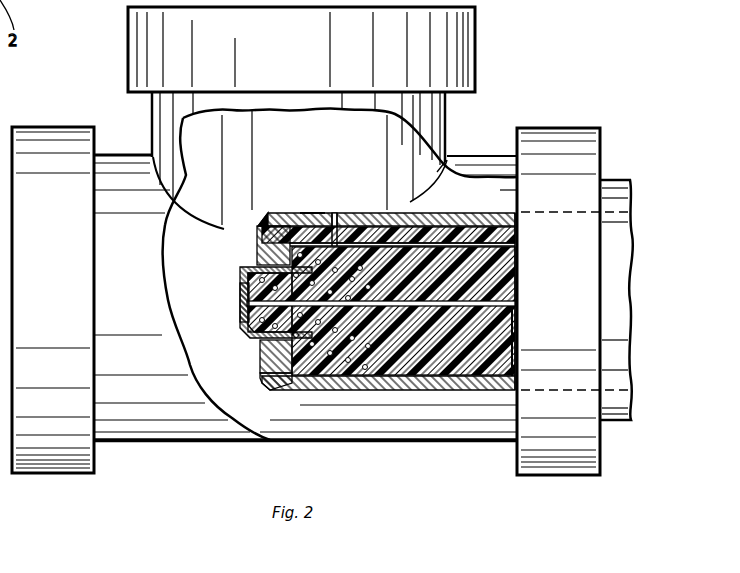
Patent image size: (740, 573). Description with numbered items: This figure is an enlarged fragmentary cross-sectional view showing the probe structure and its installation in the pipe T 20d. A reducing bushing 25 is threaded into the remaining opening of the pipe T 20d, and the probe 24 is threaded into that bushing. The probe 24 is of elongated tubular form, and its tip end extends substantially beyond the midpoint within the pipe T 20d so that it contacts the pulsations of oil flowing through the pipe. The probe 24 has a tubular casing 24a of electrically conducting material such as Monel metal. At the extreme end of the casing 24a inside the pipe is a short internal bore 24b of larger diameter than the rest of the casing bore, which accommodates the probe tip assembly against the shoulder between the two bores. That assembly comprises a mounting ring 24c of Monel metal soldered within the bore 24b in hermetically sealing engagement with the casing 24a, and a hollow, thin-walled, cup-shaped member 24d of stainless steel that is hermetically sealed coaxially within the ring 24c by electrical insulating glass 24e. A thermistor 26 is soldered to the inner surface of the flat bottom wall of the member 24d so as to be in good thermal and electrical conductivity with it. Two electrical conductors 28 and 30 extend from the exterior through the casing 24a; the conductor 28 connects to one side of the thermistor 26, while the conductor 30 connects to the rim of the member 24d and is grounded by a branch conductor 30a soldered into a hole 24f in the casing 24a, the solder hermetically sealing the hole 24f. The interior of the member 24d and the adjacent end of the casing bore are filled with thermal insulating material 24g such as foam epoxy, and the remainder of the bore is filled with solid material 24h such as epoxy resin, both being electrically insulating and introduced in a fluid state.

The pipe T 20d is at (186, 442).
The probe 24 is at (378, 211).
The tubular casing 24a is at (318, 215).
The internal bore 24b is at (262, 378).
The mounting ring 24c is at (266, 229).
The cup-shaped member 24d is at (260, 352).
The glass 24e is at (270, 252).
The hole 24f is at (335, 214).
The thermal insulating material 24g is at (243, 320).
The solid material 24h is at (518, 340).
The reducing bushing 25 is at (612, 186).
The thermistor 26 is at (243, 301).
The electrical conductor 28 is at (517, 302).
The electrical conductor 30 is at (516, 246).
The branch conductor 30a is at (340, 216).